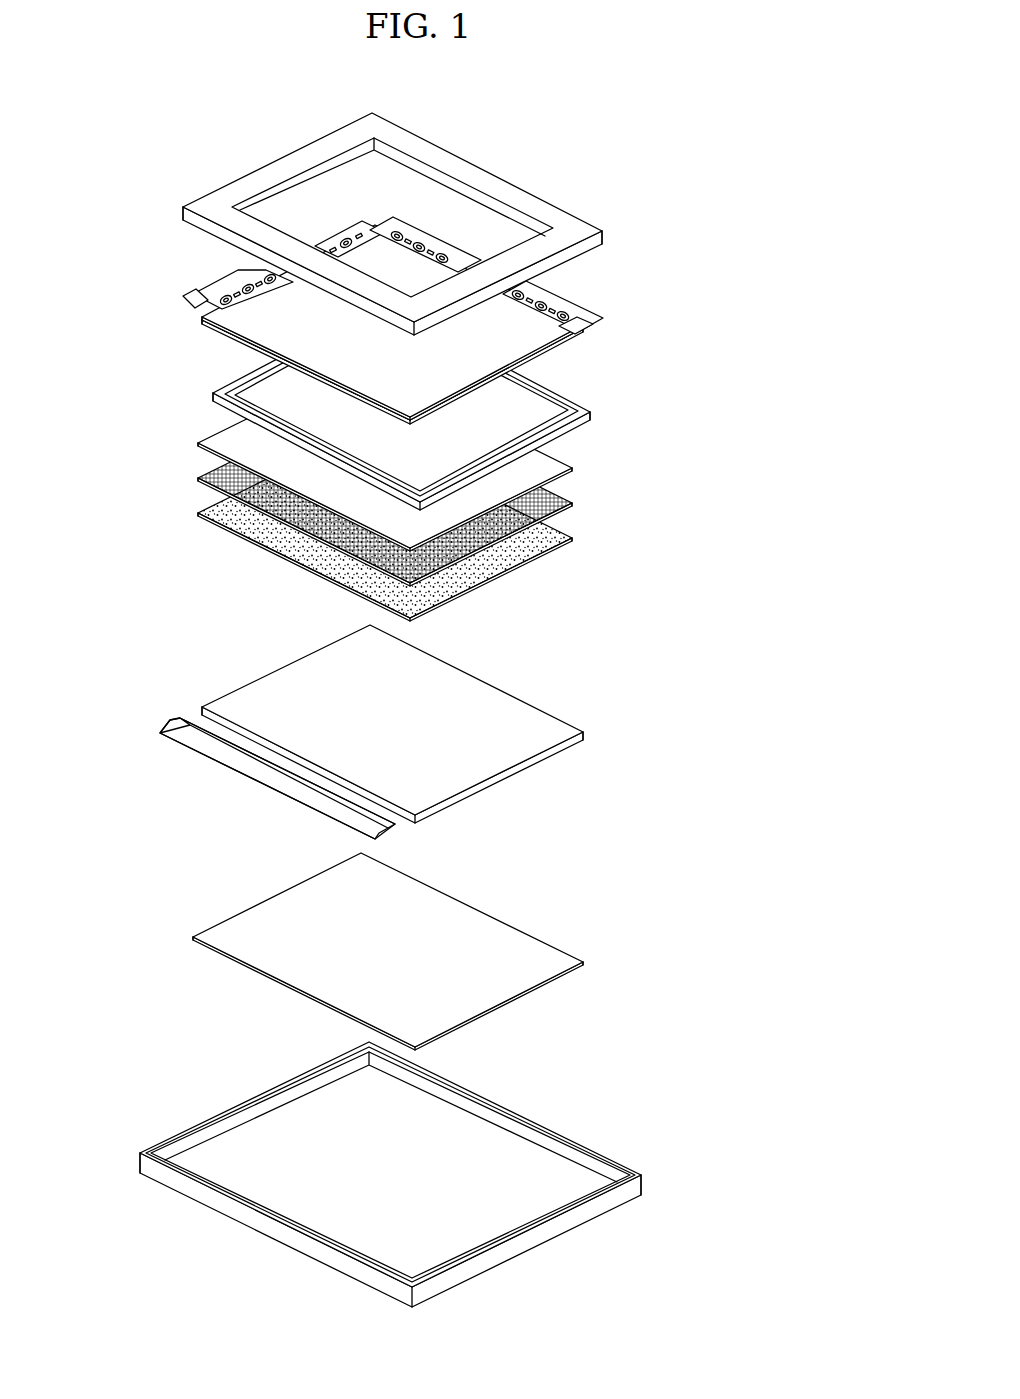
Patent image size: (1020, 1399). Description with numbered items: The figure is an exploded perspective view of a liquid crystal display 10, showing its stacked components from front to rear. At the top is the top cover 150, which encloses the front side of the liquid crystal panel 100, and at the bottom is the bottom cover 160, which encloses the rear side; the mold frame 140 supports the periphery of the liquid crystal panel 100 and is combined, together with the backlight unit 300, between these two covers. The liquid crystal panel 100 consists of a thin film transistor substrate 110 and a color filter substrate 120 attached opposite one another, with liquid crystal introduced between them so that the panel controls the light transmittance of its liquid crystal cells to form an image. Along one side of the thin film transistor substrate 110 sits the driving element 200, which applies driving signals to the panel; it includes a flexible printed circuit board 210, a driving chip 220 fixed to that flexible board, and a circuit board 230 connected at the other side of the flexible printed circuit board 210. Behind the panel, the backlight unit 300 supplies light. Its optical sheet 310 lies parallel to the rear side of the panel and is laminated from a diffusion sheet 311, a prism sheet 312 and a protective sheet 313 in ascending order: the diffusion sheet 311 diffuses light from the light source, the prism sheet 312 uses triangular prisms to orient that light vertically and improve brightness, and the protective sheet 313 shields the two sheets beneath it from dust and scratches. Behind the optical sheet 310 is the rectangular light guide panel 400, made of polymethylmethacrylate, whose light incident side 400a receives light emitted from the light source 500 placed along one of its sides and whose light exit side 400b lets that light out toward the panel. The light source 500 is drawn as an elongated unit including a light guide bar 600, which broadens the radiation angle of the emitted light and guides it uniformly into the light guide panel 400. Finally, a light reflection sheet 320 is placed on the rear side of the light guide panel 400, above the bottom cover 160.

The liquid crystal display 10 is at (418, 691).
The liquid crystal panel 100 is at (464, 324).
The thin film transistor substrate 110 is at (592, 318).
The color filter substrate 120 is at (586, 335).
The mold frame 140 is at (582, 423).
The top cover 150 is at (565, 217).
The bottom cover 160 is at (617, 1162).
The driving element 200 is at (327, 276).
The flexible printed circuit board 210 is at (213, 300).
The driving chip 220 is at (207, 307).
The circuit board 230 is at (227, 283).
The backlight unit 300 is at (434, 706).
The optical sheet 310 is at (462, 492).
The diffusion sheet 311 is at (570, 547).
The prism sheet 312 is at (570, 512).
The protective sheet 313 is at (430, 457).
The light reflection sheet 320 is at (553, 960).
The light guide panel 400 is at (388, 720).
The light incident side 400a is at (200, 712).
The light exit side 400b is at (283, 677).
The light source 500 is at (265, 780).
The light guide bar 600 is at (247, 765).